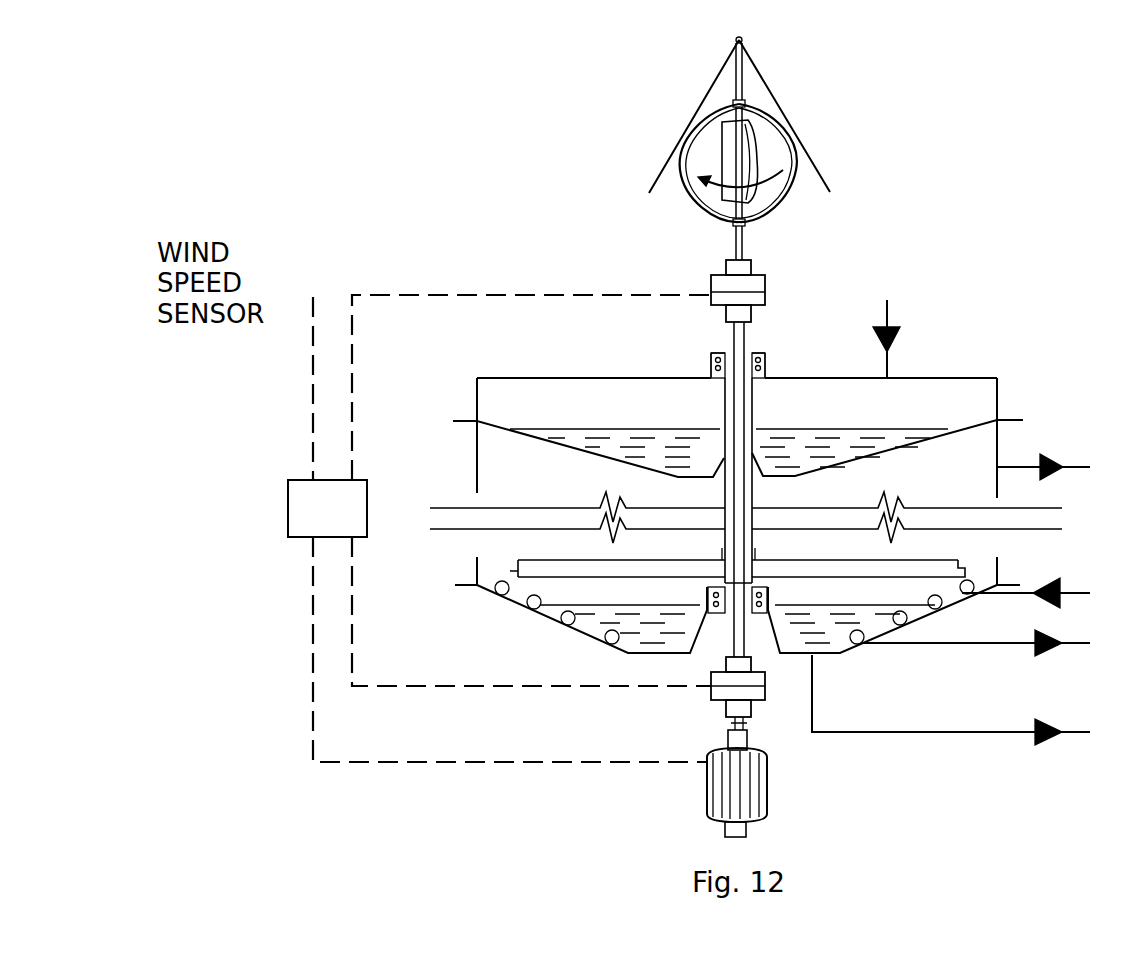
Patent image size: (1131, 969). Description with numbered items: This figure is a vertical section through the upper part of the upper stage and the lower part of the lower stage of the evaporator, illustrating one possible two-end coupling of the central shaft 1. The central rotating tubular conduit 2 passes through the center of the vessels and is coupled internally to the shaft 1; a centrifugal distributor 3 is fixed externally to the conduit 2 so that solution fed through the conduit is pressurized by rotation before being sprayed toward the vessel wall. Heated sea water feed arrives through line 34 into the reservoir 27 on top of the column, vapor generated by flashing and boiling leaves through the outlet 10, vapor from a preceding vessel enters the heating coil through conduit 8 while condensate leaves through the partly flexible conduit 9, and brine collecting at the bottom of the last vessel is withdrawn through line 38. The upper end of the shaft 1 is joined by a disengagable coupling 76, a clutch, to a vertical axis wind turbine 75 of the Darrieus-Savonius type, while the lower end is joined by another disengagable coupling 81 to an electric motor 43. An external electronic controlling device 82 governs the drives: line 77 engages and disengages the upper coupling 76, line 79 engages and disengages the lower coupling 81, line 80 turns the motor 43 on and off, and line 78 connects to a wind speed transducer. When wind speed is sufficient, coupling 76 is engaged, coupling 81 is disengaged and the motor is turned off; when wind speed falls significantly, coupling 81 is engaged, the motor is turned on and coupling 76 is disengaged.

The central shaft 1 is at (730, 333).
The central rotating tubular conduit 2 is at (756, 403).
The centrifugal distributor 3 is at (808, 558).
The conduit 8 is at (1107, 583).
The conduit 9 is at (1107, 633).
The outlet 10 is at (1110, 456).
The reservoir 27 is at (507, 376).
The line 34 is at (908, 303).
The line 38 is at (1107, 721).
The electric motor 43 is at (773, 808).
The vertical axis wind turbine 75 is at (790, 210).
The disengagable coupling 76 is at (790, 299).
The control line 77 is at (392, 293).
The control line 78 is at (309, 413).
The control line 79 is at (352, 618).
The control line 80 is at (313, 620).
The disengagable coupling 81 is at (718, 708).
The electronic controlling device 82 is at (286, 524).